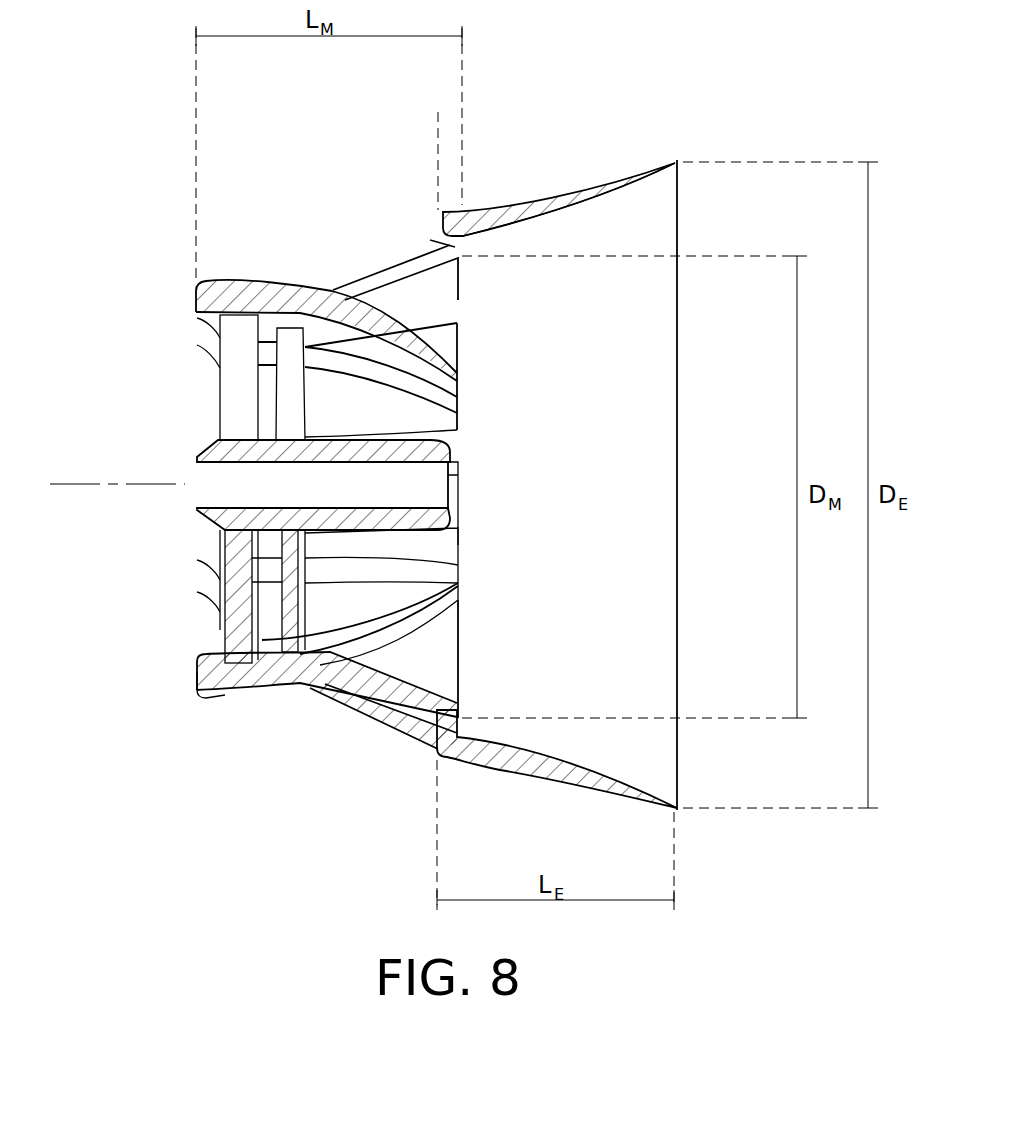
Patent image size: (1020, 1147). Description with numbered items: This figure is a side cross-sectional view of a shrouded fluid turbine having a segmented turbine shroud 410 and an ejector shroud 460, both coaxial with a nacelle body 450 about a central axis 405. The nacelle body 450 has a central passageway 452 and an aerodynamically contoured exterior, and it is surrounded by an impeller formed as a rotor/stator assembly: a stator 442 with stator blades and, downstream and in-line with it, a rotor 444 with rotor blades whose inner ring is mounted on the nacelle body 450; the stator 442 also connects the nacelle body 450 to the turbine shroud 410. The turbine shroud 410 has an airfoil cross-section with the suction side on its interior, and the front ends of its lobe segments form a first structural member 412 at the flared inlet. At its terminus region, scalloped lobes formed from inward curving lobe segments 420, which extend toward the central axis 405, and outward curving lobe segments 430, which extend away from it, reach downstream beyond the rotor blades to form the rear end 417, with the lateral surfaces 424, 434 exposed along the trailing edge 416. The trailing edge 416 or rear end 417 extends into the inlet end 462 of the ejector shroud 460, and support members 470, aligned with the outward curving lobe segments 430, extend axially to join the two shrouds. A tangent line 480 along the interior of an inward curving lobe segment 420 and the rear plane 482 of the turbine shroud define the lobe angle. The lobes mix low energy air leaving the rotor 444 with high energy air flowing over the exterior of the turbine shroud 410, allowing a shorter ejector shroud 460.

The central axis 405 is at (67, 486).
The turbine shroud 410 is at (219, 290).
The first structural member 412 is at (210, 692).
The trailing edge 416 is at (462, 273).
The rear end 417 is at (557, 772).
The inward curving lobe segment 420 is at (457, 540).
The lateral surface 424 is at (443, 562).
The outward curving lobe segment 430 is at (442, 652).
The lateral surface 434 is at (438, 677).
The stator 442 is at (232, 330).
The rotor 444 is at (288, 397).
The nacelle body 450 is at (212, 452).
The central passageway 452 is at (208, 493).
The ejector shroud 460 is at (475, 209).
The inlet end 462 is at (432, 149).
The support member 470 is at (420, 253).
The tangent line 480 is at (168, 594).
The rear plane 482 is at (360, 717).